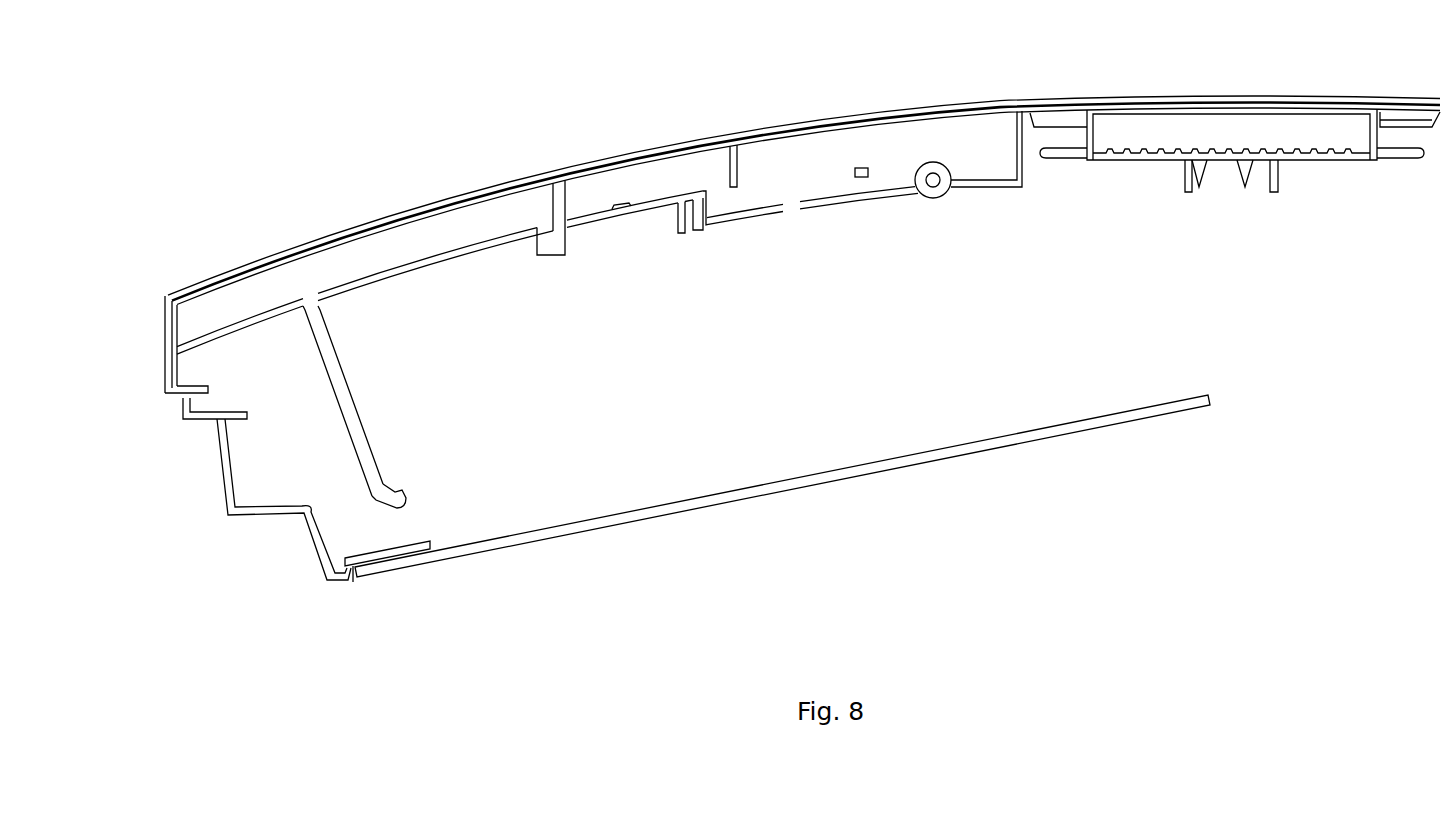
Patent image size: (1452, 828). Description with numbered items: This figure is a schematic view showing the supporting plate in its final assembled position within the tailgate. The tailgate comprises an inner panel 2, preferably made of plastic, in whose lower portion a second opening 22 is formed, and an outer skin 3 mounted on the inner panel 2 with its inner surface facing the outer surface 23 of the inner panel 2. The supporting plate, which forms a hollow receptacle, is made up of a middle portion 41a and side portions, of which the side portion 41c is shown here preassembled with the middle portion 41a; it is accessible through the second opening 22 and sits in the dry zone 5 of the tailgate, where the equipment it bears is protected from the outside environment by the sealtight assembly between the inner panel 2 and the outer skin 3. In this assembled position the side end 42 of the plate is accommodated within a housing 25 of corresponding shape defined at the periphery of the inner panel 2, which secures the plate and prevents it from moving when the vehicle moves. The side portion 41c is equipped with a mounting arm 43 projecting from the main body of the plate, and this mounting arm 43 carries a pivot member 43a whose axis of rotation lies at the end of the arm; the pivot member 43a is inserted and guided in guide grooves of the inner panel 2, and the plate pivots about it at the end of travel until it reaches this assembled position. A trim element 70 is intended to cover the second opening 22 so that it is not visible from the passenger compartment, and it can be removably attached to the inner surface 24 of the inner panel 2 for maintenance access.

The inner panel 2 is at (199, 355).
The outer skin 3 is at (918, 86).
The dry zone 5 is at (767, 261).
The second opening 22 is at (1198, 324).
The outer surface of the inner panel 23 is at (372, 553).
The inner surface of the inner panel 24 is at (407, 552).
The housing 25 is at (190, 370).
The middle portion 41a is at (1137, 162).
The side portion 41c is at (563, 248).
The side end 42 is at (170, 327).
The mounting arm 43 is at (463, 407).
The pivot member 43a is at (405, 495).
The trim element 70 is at (940, 457).